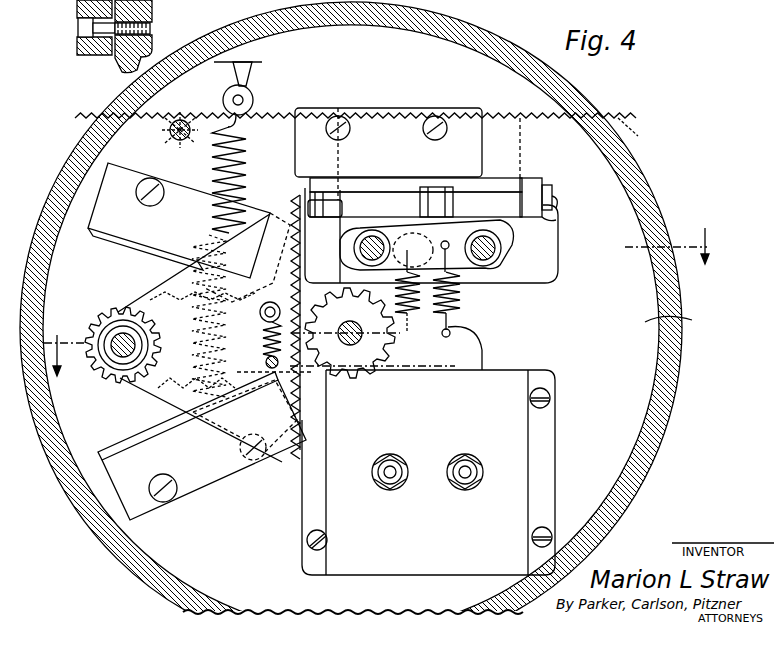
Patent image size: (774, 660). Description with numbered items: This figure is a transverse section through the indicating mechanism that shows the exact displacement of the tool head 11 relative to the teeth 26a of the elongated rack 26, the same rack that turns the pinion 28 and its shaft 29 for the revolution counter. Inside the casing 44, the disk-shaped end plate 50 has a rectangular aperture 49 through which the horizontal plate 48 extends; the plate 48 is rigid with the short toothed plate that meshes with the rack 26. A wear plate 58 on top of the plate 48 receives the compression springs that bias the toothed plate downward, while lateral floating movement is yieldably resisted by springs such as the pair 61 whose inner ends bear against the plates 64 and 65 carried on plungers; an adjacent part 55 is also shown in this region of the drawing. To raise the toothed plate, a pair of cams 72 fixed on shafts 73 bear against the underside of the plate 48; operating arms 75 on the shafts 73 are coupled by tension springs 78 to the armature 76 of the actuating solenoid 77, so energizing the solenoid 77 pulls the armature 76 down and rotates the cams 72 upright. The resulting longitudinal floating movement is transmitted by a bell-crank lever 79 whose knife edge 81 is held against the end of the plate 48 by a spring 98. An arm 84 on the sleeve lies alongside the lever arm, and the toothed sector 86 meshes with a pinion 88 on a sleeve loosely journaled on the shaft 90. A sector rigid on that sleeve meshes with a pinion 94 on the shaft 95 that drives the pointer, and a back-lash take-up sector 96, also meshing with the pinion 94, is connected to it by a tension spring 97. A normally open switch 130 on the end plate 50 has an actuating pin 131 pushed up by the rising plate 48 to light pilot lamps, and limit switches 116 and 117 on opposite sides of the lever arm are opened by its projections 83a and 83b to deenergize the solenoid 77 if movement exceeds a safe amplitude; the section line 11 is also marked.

The tool head 11 is at (376, 312).
The elongated rack 26 is at (522, 148).
The rack teeth 26a is at (641, 132).
The pinion 28 is at (172, 150).
The shaft 29 is at (171, 131).
The casing 44 is at (649, 193).
The horizontal plate 48 is at (378, 192).
The rectangular aperture 49 is at (556, 245).
The end plate 50 is at (680, 319).
The bracket 55 is at (556, 218).
The wear plate 58 is at (505, 185).
The springs 61 is at (553, 205).
The plate 64 is at (326, 190).
The plate 65 is at (546, 190).
The cams 72 is at (353, 242).
The shafts 73 is at (500, 254).
The operating arms 75 is at (448, 241).
The armature 76 is at (468, 333).
The actuating solenoid 77 is at (512, 382).
The tension springs 78 is at (432, 315).
The bell-crank lever 79 is at (298, 222).
The knife edge 81 is at (342, 207).
The projection 83a is at (235, 286).
The projection 83b is at (268, 396).
The arm 84 is at (274, 303).
The toothed sector 86 is at (191, 348).
The pinion 88 is at (117, 312).
The shaft 90 is at (108, 327).
The pinion 94 is at (372, 386).
The shaft 95 is at (346, 333).
The sector 96 is at (181, 268).
The tension spring 97 is at (262, 341).
The spring 98 is at (246, 190).
The limit switch 116 is at (140, 246).
The limit switch 117 is at (138, 446).
The switch 130 is at (424, 105).
The actuating pin 131 is at (435, 186).